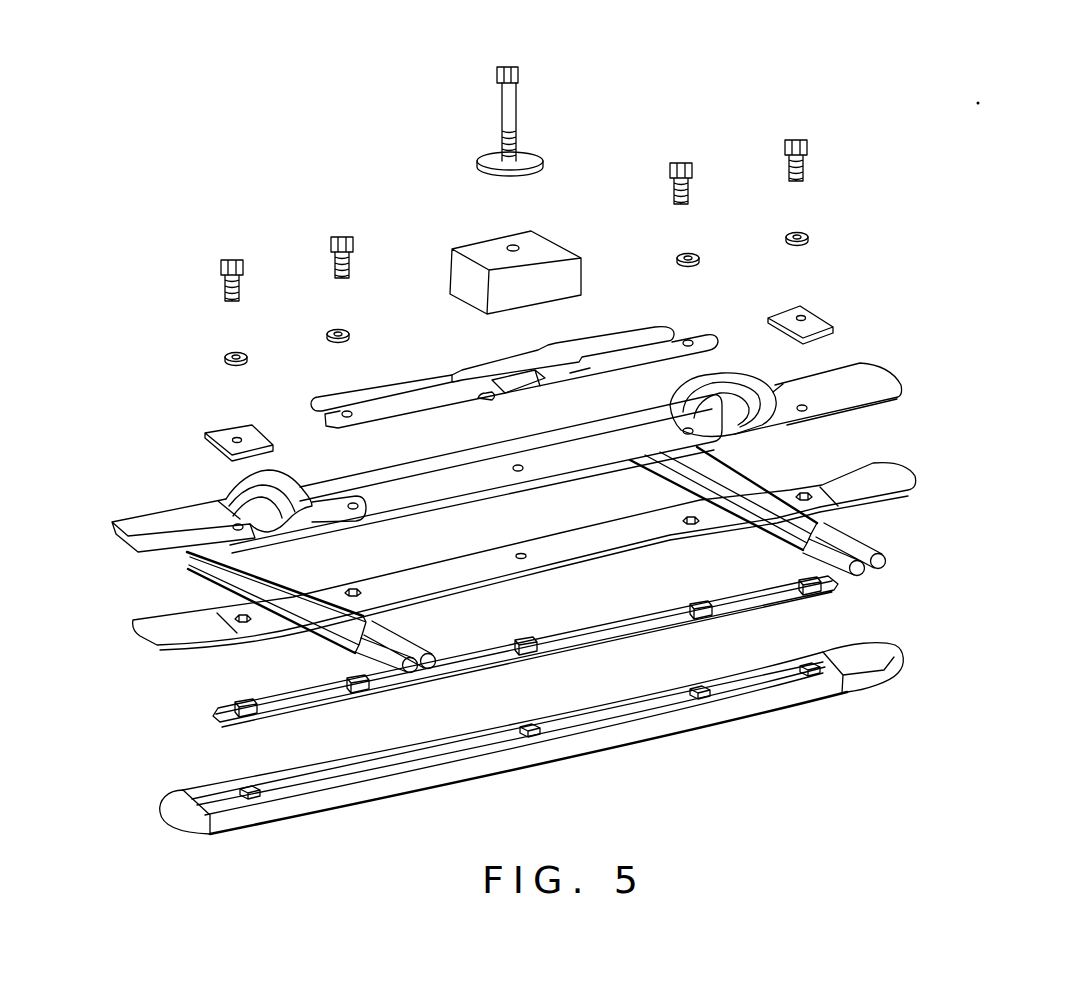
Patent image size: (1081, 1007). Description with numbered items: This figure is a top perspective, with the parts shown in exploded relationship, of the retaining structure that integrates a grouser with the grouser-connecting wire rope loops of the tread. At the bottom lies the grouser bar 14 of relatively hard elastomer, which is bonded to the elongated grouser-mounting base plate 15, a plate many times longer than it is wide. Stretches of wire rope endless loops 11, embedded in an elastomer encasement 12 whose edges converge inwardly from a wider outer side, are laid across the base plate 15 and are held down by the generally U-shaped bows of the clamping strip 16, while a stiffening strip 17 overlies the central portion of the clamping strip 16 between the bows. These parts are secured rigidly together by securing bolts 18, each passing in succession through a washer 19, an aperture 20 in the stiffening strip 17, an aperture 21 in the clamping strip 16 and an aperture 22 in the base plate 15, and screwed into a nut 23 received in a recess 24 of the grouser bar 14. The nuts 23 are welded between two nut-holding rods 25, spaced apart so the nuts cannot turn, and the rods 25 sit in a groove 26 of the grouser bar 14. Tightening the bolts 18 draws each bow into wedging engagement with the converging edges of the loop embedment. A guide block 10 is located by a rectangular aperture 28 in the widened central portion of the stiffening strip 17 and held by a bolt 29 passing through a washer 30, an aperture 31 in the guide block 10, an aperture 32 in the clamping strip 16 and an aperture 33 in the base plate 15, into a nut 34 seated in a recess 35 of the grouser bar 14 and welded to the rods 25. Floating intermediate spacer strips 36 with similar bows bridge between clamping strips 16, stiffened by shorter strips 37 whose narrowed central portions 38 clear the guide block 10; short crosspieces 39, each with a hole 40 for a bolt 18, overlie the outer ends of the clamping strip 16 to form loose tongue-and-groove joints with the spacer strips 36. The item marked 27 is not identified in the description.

The guide block 10 is at (527, 243).
The wire rope endless loops 11 is at (380, 656).
The encasement 12 is at (386, 627).
The grouser bar 14 is at (440, 770).
The grouser-mounting base plate 15 is at (620, 540).
The clamping strip 16 is at (905, 385).
The stiffening strip 17 is at (397, 403).
The securing bolts 18 is at (333, 238).
The washers 19 is at (330, 334).
The apertures in the stiffening strip 20 is at (349, 418).
The apertures in the clamping strip 21 is at (237, 524).
The apertures in the grouser-mounting base plate 22 is at (240, 616).
The nuts 23 is at (240, 704).
The recesses 24 is at (360, 770).
The nut-holding rods 25 is at (232, 722).
The groove 26 is at (597, 713).
The slot 27 is at (580, 378).
The rectangular aperture 28 is at (518, 387).
The bolt 29 is at (507, 67).
The washer 30 is at (523, 155).
The aperture in the guide block 31 is at (508, 246).
The aperture in the clamping strip 32 is at (516, 465).
The aperture in the grouser-mounting base plate 33 is at (521, 553).
The nut 34 is at (527, 640).
The recess 35 is at (528, 729).
The intermediate spacer strips 36 is at (140, 527).
The stiffening strips 37 is at (350, 397).
The central portions 38 is at (468, 367).
The crosspieces 39 is at (212, 433).
The hole 40 is at (237, 438).